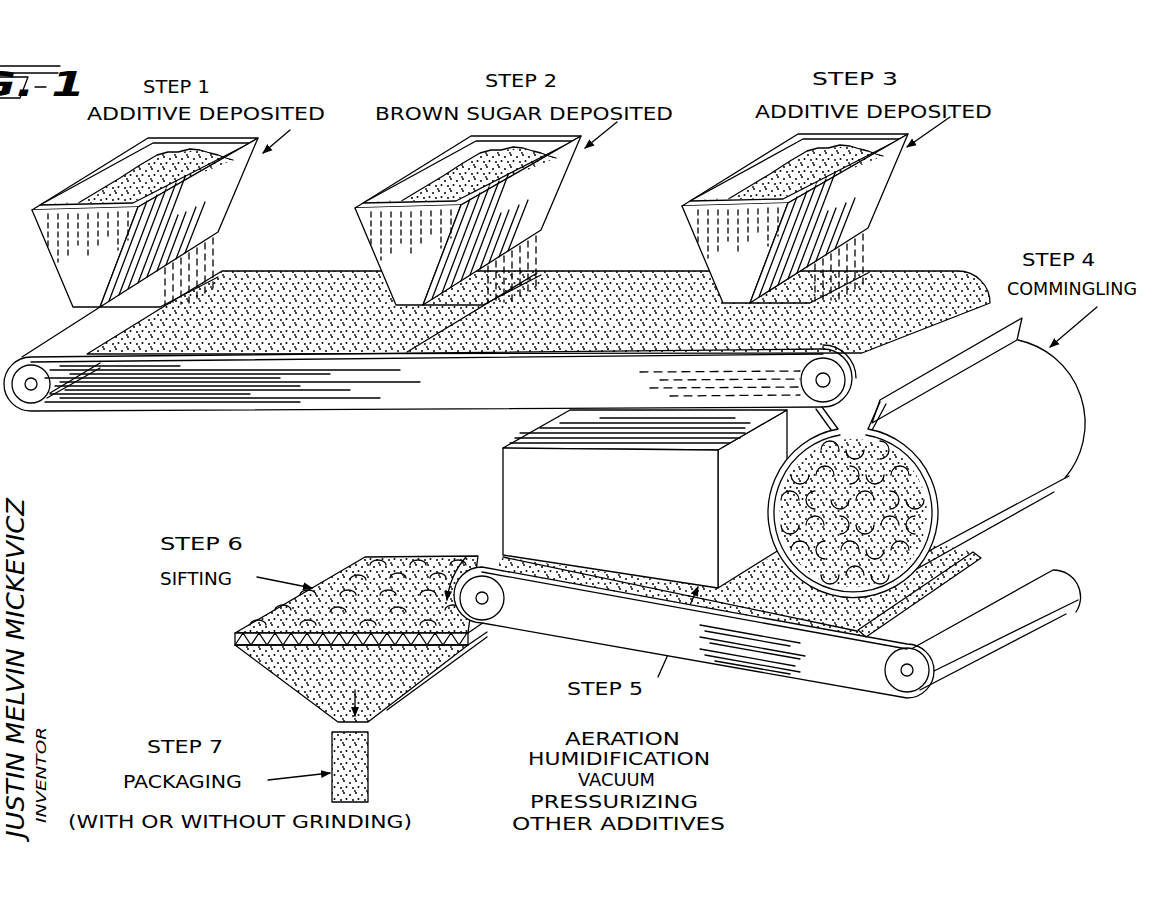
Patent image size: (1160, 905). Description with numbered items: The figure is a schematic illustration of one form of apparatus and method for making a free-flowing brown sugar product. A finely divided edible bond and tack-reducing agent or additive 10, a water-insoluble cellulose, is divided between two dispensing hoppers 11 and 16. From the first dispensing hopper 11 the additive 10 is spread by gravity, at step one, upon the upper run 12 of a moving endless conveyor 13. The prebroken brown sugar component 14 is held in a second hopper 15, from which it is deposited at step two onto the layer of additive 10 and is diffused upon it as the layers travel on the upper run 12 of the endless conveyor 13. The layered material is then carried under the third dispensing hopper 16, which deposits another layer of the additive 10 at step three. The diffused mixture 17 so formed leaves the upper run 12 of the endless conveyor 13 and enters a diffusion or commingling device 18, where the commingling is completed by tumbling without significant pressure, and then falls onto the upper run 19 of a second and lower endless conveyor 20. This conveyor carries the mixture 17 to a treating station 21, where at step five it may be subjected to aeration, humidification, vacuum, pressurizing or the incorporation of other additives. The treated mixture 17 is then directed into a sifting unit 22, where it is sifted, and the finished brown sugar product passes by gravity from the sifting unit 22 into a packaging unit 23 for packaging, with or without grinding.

The edible bond and tack-reducing agent 10 is at (133, 183).
The dispensing hopper 11 is at (230, 183).
The upper run 12 is at (78, 333).
The endless conveyor 13 is at (205, 412).
The brown sugar component 14 is at (537, 157).
The hopper 15 is at (533, 207).
The third dispensing hopper 16 is at (860, 193).
The diffused mixture 17 is at (962, 280).
The commingling device 18 is at (1090, 407).
The upper run 19 is at (1015, 572).
The second endless conveyor 20 is at (878, 693).
The treating station 21 is at (527, 502).
The sifting unit 22 is at (365, 557).
The packaging unit 23 is at (368, 763).